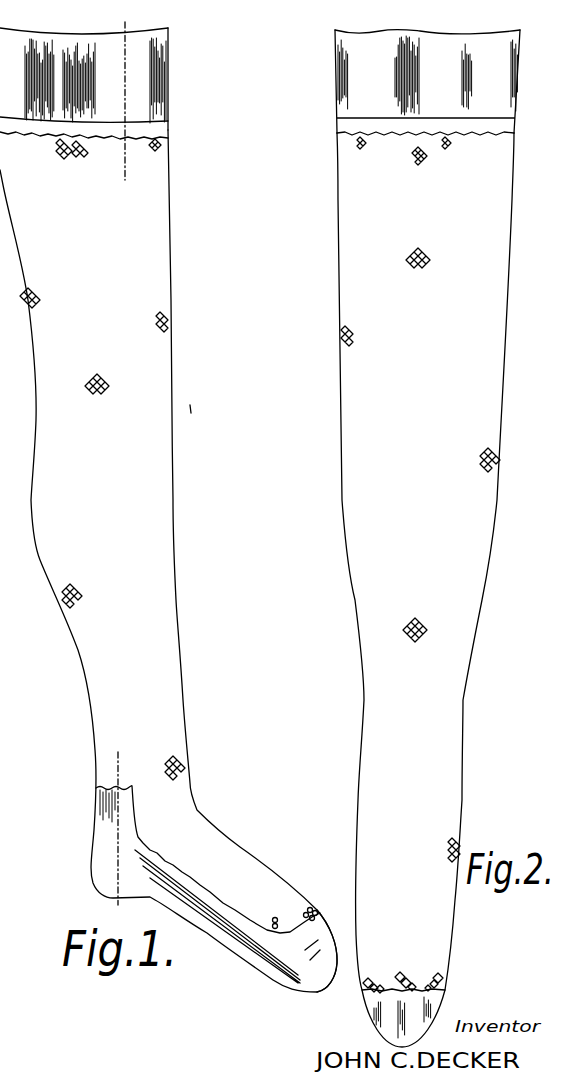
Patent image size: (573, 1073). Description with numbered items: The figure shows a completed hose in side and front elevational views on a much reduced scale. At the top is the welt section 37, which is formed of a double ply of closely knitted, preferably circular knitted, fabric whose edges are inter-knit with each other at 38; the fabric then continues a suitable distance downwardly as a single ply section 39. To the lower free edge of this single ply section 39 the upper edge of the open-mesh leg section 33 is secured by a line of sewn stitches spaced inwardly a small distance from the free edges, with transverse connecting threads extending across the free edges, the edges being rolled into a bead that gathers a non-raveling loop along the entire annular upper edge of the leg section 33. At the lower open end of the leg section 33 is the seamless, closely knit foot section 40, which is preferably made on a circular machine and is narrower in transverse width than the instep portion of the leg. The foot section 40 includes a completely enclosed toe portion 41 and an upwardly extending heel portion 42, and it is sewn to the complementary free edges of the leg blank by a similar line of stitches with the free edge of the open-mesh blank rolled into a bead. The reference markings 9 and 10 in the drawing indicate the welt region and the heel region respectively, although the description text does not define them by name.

In FIG. 1, the welt section 9 is at (172, 38).
In FIG. 1, the welt section 37 is at (170, 62).
In FIG. 1, the inter-knit edges 38 is at (200, 75).
In FIG. 1, the single ply section 39 is at (170, 134).
In FIG. 1, the leg section 33 is at (160, 467).
In FIG. 1, the heel section 10 is at (118, 902).
In FIG. 1, the heel portion 42 is at (100, 822).
In FIG. 1, the foot section 40 is at (232, 945).
In FIG. 1, the toe portion 41 is at (322, 985).
In FIG. 2, the toe portion 41 is at (385, 1029).